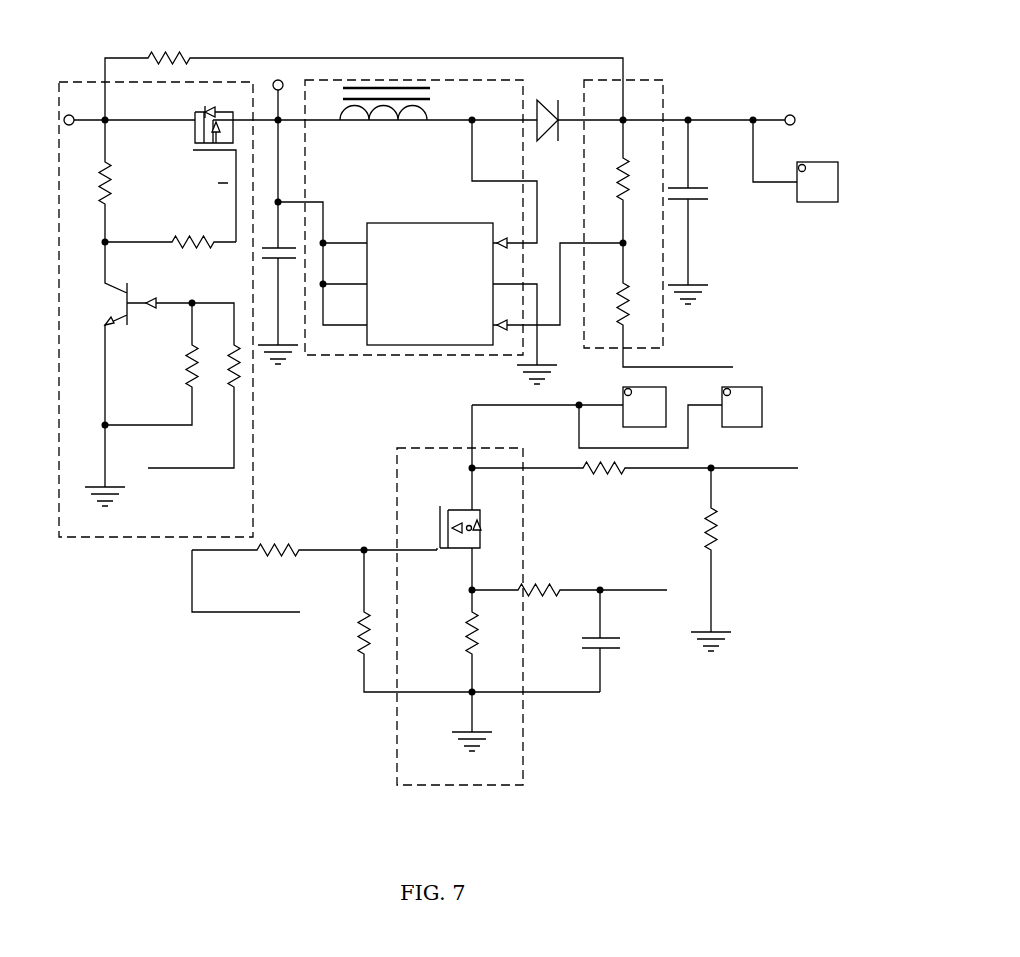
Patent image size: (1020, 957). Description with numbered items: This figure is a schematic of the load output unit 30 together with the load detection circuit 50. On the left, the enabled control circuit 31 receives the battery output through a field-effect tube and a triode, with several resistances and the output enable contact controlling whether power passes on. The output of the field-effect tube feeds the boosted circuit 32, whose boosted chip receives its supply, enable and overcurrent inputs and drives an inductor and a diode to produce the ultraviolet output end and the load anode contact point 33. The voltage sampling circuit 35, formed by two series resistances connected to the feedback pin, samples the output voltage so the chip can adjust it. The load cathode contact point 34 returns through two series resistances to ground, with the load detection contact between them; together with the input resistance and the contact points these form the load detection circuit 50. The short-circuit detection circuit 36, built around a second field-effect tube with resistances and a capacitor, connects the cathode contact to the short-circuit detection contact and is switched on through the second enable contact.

The load output unit 30 is at (757, 62).
The enabled control circuit 31 is at (80, 82).
The boosted circuit 32 is at (435, 80).
The load anode contact point 33 is at (838, 188).
The load cathode contact point 34 is at (763, 405).
The voltage sampling circuit 35 is at (636, 80).
The short-circuit detection circuit 36 is at (522, 778).
The load detection circuit 50 is at (780, 458).